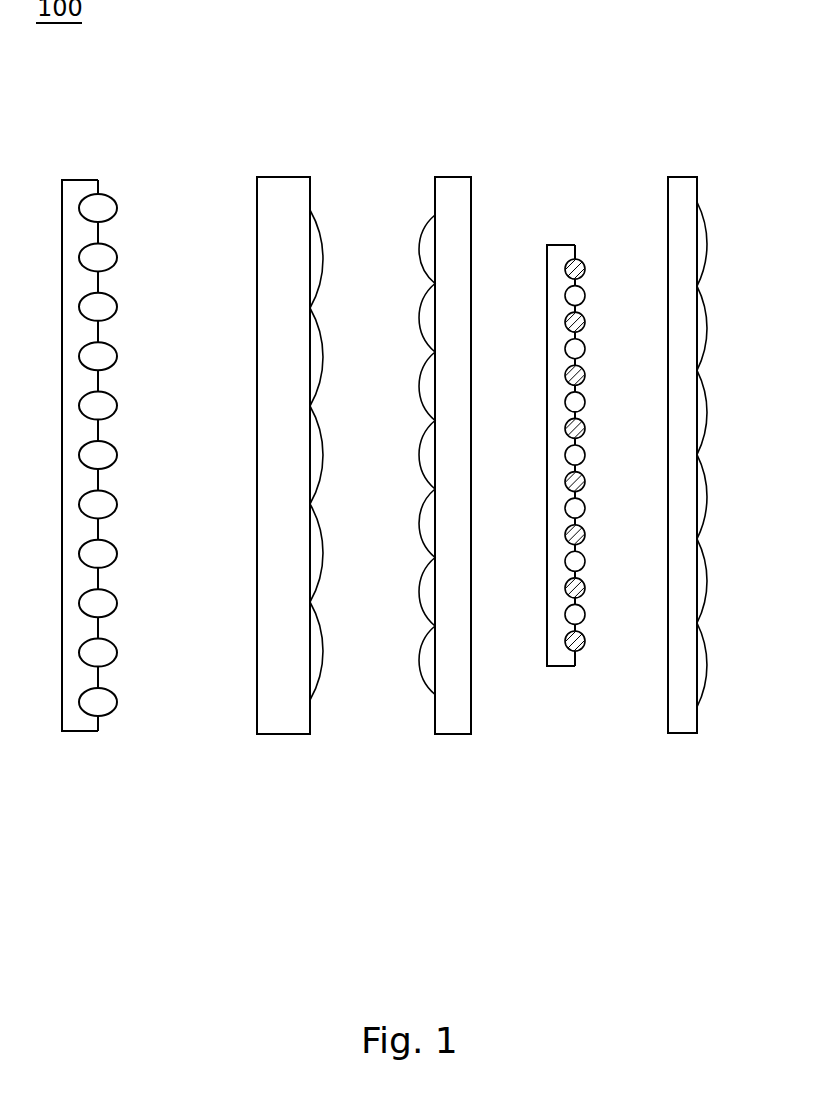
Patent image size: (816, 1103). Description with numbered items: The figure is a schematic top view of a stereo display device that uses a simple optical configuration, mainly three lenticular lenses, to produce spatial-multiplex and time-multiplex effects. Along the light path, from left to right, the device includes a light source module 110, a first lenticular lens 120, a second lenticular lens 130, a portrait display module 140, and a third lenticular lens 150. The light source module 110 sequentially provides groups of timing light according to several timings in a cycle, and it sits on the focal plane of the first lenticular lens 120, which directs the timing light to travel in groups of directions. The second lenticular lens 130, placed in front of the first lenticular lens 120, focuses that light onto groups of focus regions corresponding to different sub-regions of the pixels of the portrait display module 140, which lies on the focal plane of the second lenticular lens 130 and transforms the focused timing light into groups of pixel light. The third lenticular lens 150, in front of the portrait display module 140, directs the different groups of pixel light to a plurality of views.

The light source module 110 is at (81, 178).
The first lenticular lens 120 is at (283, 192).
The second lenticular lens 130 is at (451, 192).
The portrait display module 140 is at (562, 246).
The third lenticular lens 150 is at (679, 192).